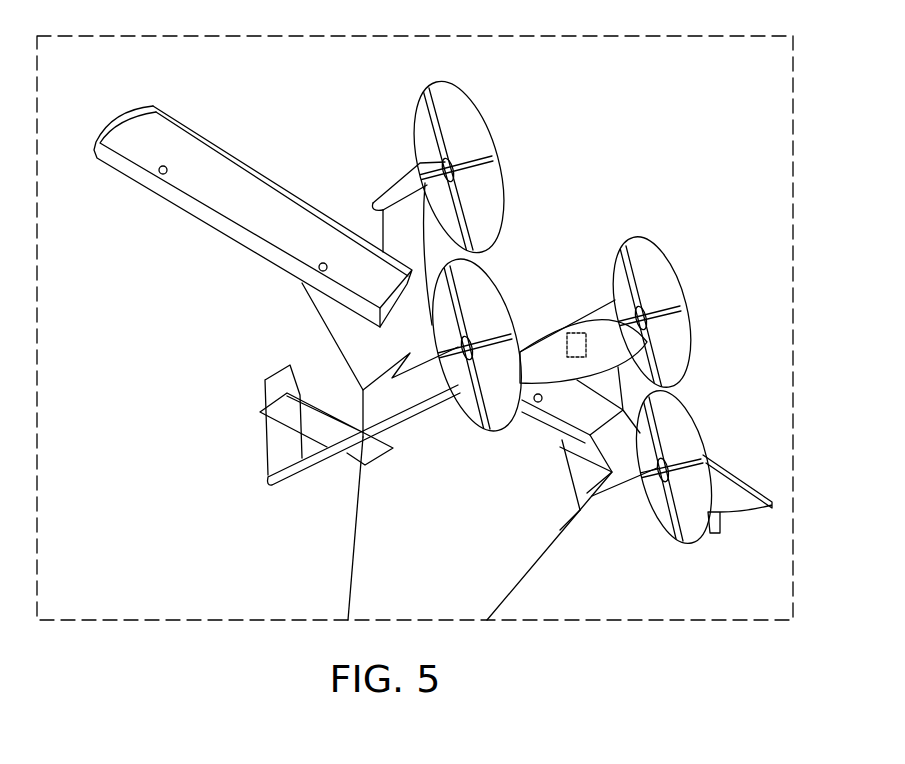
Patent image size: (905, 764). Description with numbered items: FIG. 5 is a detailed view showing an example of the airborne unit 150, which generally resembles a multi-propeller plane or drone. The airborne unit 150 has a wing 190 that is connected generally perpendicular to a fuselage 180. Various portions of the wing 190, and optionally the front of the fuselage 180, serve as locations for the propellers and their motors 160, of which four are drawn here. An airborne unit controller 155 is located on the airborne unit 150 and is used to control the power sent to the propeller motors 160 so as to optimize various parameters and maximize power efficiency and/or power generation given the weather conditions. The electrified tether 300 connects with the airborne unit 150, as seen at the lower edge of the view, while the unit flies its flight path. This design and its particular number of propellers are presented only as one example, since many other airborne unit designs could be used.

The airborne unit 150 is at (640, 148).
The airborne unit controller 155 is at (576, 333).
The propellers and their motors 160 is at (710, 423).
The fuselage 180 is at (434, 425).
The wing 190 is at (193, 160).
The electrified tether 300 is at (362, 571).